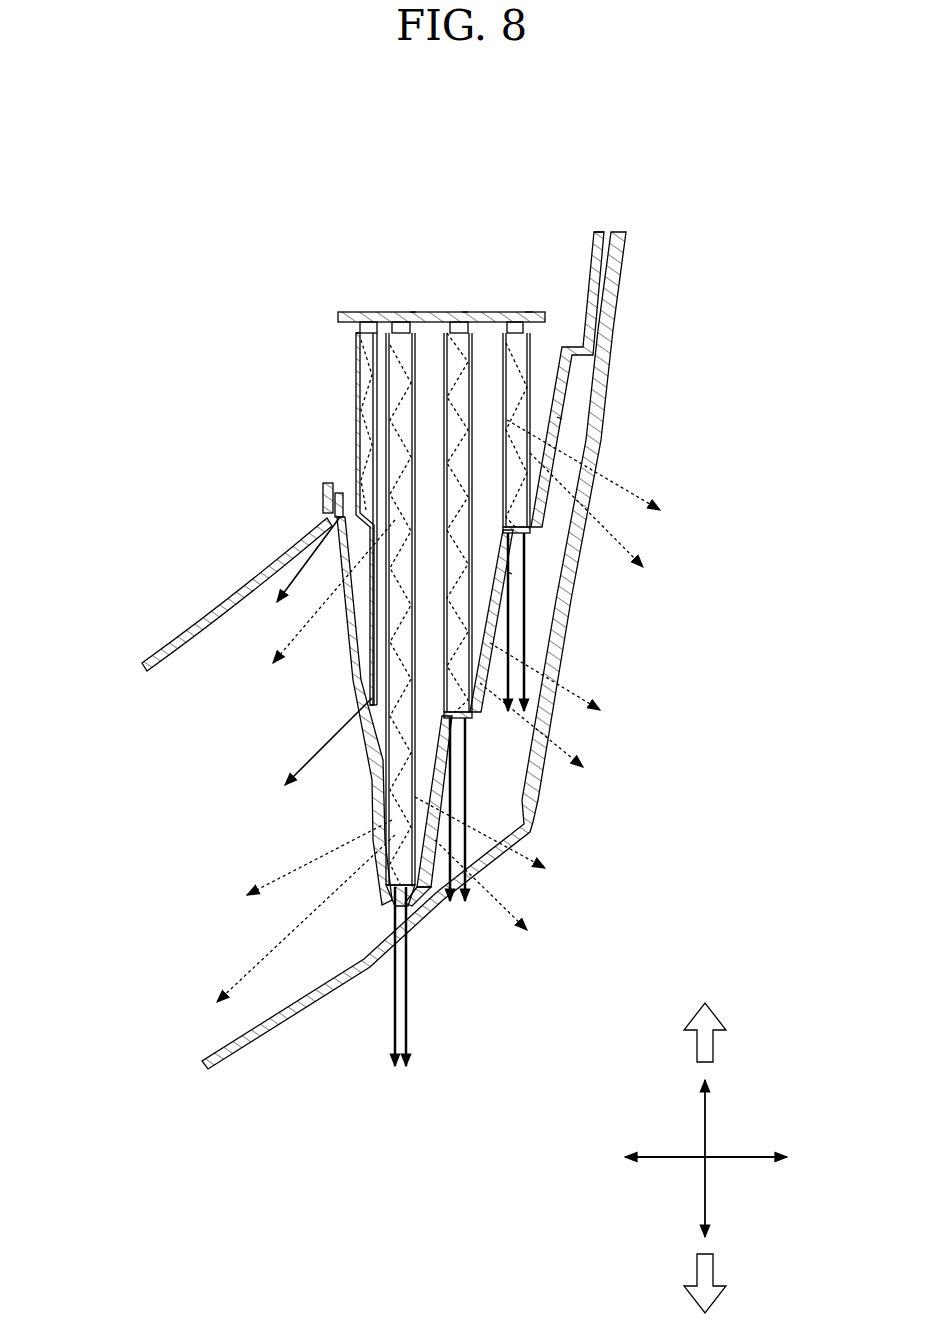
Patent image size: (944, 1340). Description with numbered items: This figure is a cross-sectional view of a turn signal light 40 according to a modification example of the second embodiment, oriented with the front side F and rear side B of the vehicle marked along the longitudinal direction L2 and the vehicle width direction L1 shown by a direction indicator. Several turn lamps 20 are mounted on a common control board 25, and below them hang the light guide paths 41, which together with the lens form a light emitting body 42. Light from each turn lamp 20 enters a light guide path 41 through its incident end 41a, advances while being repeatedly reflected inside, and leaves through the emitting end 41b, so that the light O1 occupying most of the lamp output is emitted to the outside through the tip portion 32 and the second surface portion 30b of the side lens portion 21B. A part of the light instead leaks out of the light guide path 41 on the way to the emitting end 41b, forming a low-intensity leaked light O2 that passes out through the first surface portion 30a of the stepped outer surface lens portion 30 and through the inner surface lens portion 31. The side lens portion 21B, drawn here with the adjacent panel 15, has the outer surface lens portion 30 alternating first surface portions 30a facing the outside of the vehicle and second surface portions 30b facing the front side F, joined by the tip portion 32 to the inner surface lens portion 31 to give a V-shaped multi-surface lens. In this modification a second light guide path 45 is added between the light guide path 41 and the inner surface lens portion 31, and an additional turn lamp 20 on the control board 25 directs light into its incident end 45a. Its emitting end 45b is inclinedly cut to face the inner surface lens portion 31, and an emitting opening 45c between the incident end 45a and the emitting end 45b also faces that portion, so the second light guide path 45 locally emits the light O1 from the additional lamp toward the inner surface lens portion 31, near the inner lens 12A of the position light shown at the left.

The turn signal light 40 is at (333, 176).
The light emitting body 42 is at (280, 290).
The control board 25 is at (348, 311).
The turn lamp 20 is at (363, 312).
The incident end 41a is at (415, 315).
The light guide path 41 is at (391, 360).
The emitting end 41b is at (394, 898).
The second light guide path 45 is at (353, 462).
The incident end 45a is at (356, 330).
The emitting end 45b is at (372, 703).
The emitting opening 45c is at (326, 520).
The inner lens 12A is at (193, 628).
The side panel 15 is at (621, 250).
The side lens portion 21B is at (607, 296).
The outer surface lens portion 30 is at (565, 389).
The first surface portion 30a is at (557, 417).
The second surface portion 30b is at (508, 572).
The inner surface lens portion 31 is at (378, 833).
The tip portion 32 is at (420, 905).
The light O1 is at (300, 583).
The leaked light O2 is at (308, 624).
The rear side B is at (713, 1043).
The front side F is at (713, 1262).
The vehicle width direction L1 is at (753, 1157).
The longitudinal direction L2 is at (708, 1122).